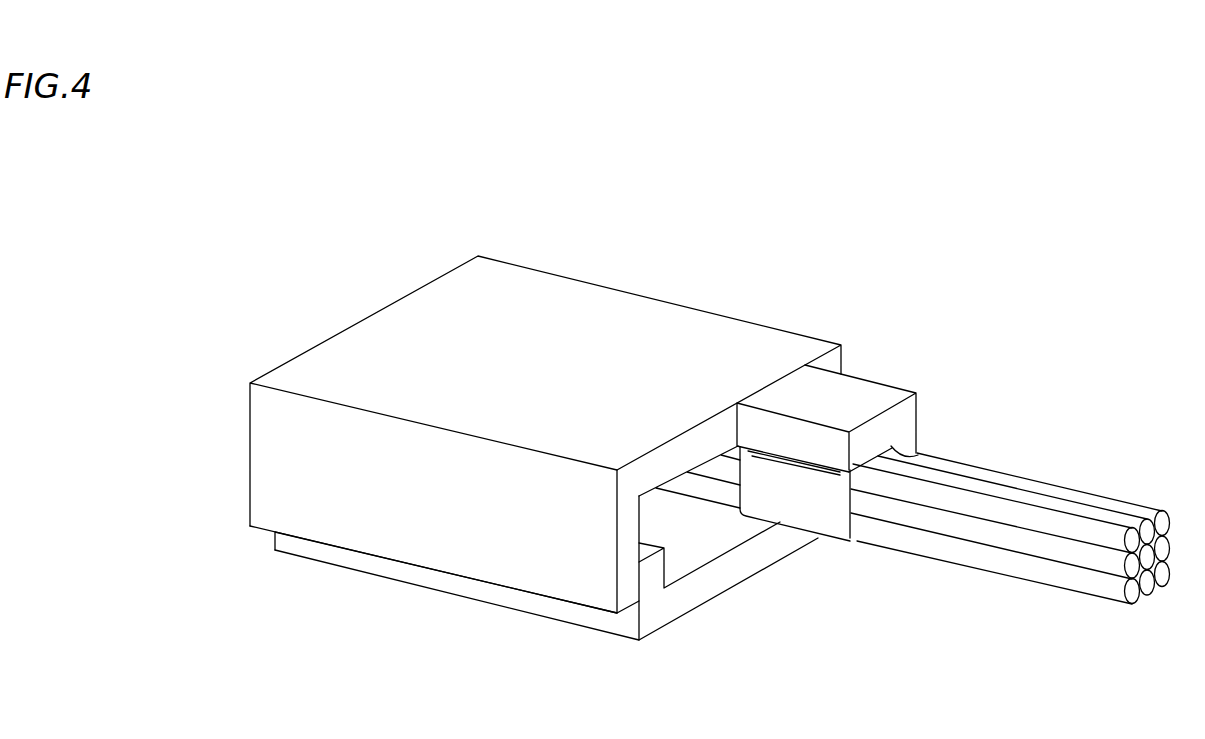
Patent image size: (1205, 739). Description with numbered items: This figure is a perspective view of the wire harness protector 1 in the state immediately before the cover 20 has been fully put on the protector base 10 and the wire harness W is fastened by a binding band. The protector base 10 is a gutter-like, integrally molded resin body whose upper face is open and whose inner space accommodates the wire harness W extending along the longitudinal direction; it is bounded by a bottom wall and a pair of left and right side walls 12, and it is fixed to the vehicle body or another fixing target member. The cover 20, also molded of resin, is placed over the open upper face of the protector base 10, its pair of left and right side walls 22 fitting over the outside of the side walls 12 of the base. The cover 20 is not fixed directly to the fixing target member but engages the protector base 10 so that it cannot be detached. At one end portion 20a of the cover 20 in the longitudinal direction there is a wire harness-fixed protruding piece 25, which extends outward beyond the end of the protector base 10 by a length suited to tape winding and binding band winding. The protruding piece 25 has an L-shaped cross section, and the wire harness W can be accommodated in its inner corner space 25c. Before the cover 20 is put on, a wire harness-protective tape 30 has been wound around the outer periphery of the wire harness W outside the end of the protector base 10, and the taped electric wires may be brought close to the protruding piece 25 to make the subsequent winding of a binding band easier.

The wire harness protector 1 is at (167, 467).
The protector base 10 is at (262, 544).
The side walls 12 is at (535, 605).
The cover 20 is at (244, 467).
The one end portion of the cover 20a is at (694, 448).
The side walls of the cover 22 is at (475, 560).
The wire harness-fixed protruding piece 25 is at (888, 372).
The inner corner space 25c is at (925, 455).
The wire harness-protective tape 30 is at (836, 514).
The wire harness W is at (1074, 483).